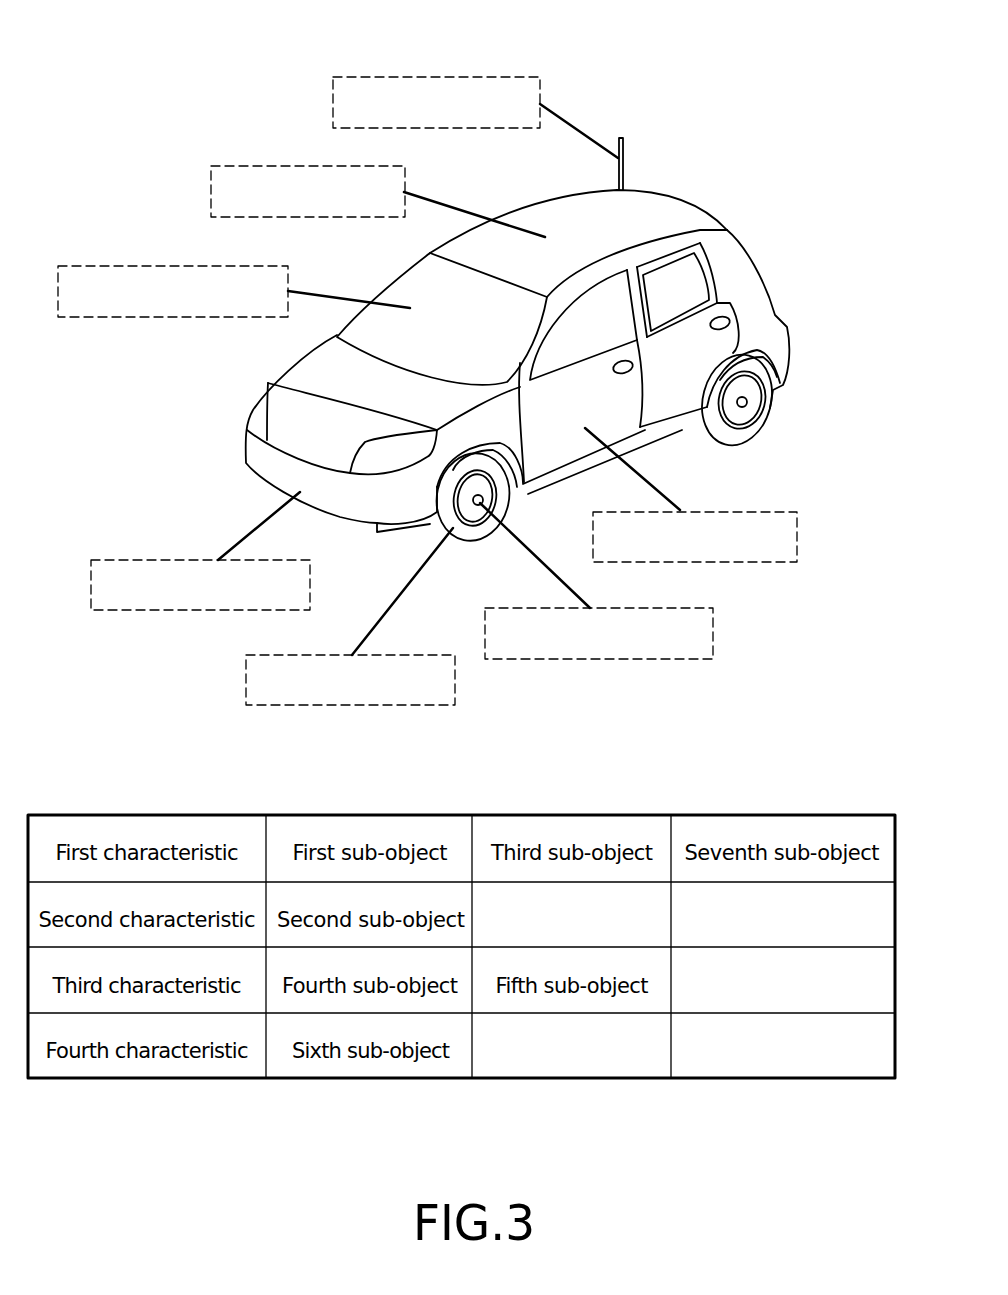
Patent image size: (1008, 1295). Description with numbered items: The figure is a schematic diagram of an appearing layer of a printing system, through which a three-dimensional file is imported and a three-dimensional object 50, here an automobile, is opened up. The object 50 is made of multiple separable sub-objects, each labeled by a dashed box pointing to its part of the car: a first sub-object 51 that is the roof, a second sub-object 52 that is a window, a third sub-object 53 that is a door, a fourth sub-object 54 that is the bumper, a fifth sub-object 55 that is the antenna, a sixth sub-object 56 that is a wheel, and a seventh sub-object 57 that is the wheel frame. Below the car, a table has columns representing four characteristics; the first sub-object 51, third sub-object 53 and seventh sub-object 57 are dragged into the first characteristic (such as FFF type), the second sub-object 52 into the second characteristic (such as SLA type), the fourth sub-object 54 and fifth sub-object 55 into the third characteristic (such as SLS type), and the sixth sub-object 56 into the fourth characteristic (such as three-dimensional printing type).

The 3D object 50 is at (722, 203).
The first sub-object 51 is at (226, 180).
The second sub-object 52 is at (77, 278).
The third sub-object 53 is at (787, 540).
The fourth sub-object 54 is at (112, 570).
The fifth sub-object 55 is at (349, 92).
The sixth sub-object 56 is at (438, 682).
The seventh sub-object 57 is at (700, 637).